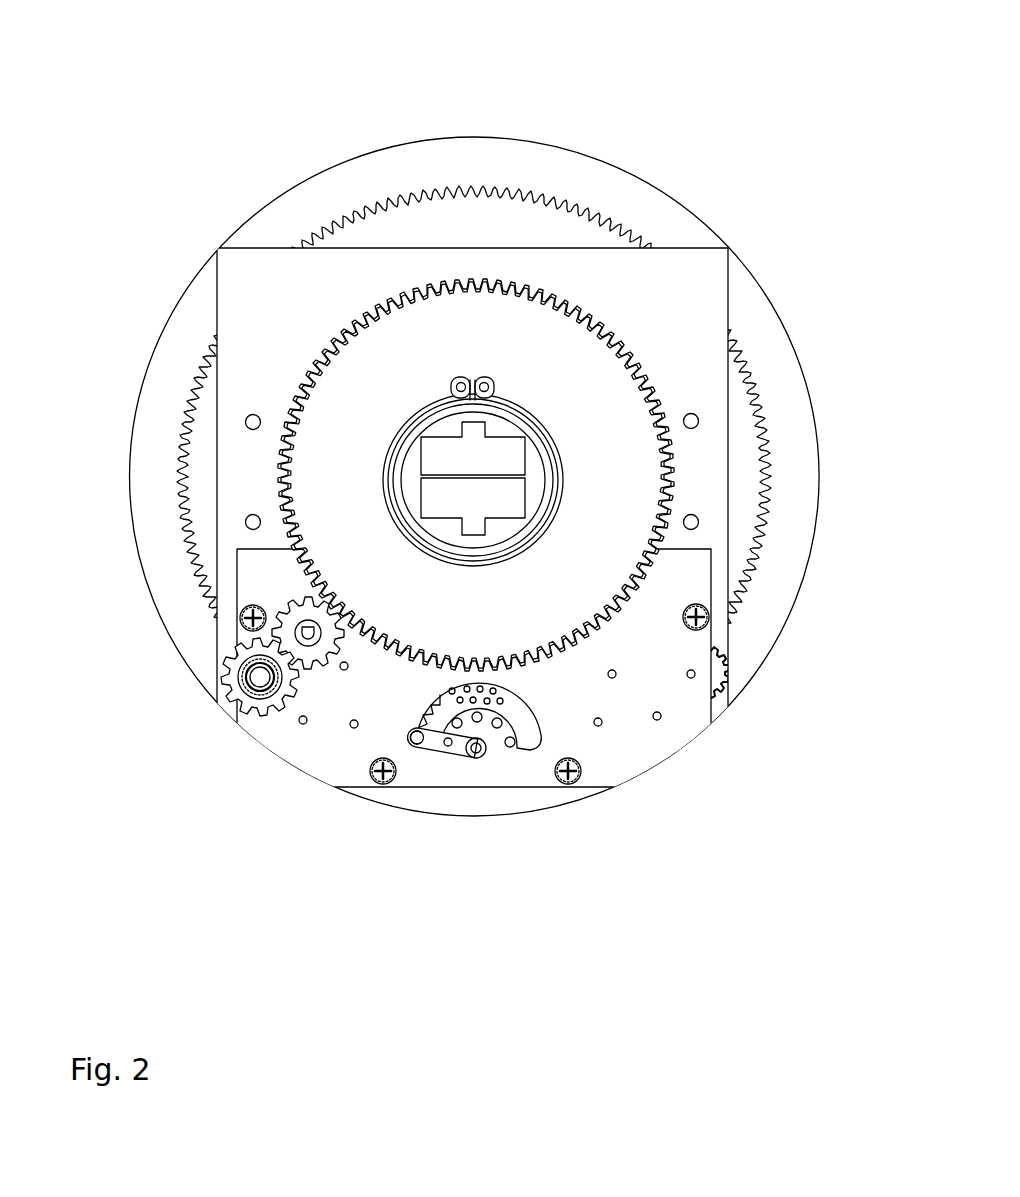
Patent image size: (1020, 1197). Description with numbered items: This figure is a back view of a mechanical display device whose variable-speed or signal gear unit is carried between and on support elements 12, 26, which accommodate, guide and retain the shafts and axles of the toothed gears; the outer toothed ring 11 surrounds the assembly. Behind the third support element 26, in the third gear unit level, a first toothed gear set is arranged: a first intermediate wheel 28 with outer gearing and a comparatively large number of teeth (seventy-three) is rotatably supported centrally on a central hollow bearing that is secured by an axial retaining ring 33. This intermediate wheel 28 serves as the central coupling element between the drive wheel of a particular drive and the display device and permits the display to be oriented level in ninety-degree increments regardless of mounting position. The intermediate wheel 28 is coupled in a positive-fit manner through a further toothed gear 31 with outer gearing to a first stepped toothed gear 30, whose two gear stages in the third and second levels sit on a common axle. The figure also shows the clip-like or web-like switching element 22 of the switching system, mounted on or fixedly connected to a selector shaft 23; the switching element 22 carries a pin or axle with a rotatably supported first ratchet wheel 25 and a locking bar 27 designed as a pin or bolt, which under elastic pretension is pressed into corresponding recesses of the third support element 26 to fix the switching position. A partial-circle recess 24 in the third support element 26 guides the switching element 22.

The outer toothed ring gear 11 is at (296, 221).
The support element 12 is at (268, 366).
The switching element 22 is at (455, 739).
The selector shaft 23 is at (476, 757).
The recess 24 is at (530, 737).
The first ratchet wheel 25 is at (413, 733).
The third support element 26 is at (390, 704).
The locking bar 27 is at (449, 746).
The first intermediate wheel 28 is at (541, 331).
The first stepped toothed gear 30 is at (242, 702).
The further toothed gear 31 is at (302, 624).
The axial retaining ring 33 is at (493, 387).